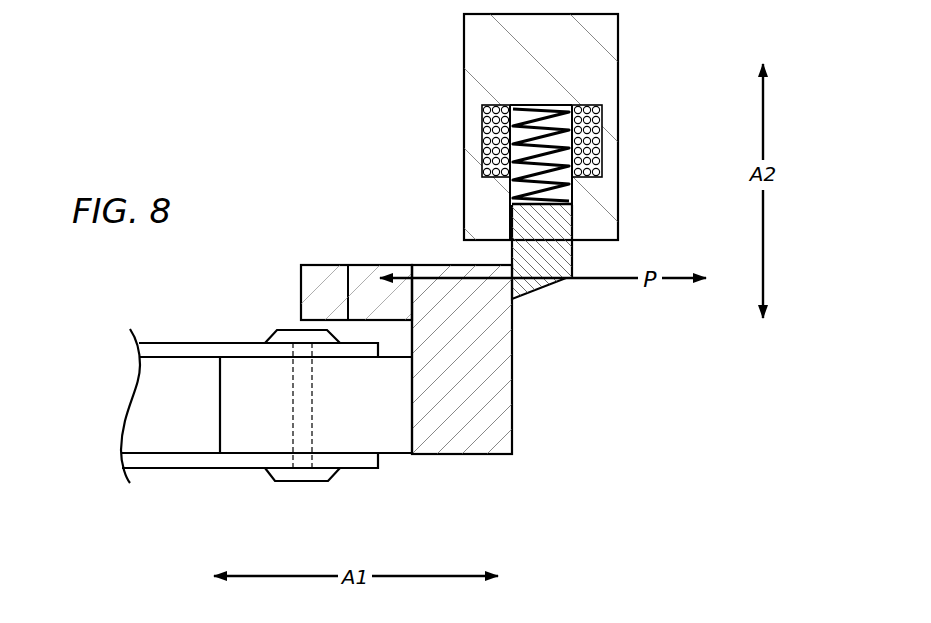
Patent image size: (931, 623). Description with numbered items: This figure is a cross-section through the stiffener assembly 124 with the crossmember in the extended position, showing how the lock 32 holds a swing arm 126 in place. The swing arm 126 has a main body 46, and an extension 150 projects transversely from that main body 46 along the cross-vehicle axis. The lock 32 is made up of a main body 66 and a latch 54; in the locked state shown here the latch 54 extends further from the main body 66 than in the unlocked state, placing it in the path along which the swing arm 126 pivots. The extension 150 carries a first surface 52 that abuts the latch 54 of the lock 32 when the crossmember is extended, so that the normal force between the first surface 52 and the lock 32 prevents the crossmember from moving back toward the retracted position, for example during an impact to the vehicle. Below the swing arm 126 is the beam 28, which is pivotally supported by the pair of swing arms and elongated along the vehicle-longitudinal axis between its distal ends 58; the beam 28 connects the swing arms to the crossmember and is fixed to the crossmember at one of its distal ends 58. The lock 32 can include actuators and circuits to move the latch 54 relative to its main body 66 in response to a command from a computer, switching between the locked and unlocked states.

The beam 28 is at (183, 476).
The lock 32 is at (416, 97).
The main body 46 is at (495, 432).
The first surface 52 is at (512, 313).
The latch 54 is at (560, 266).
The distal ends 58 is at (352, 470).
The main body 66 is at (618, 44).
The stiffener assembly 124 is at (272, 163).
The swing arm 126 is at (400, 456).
The extension 150 is at (318, 290).